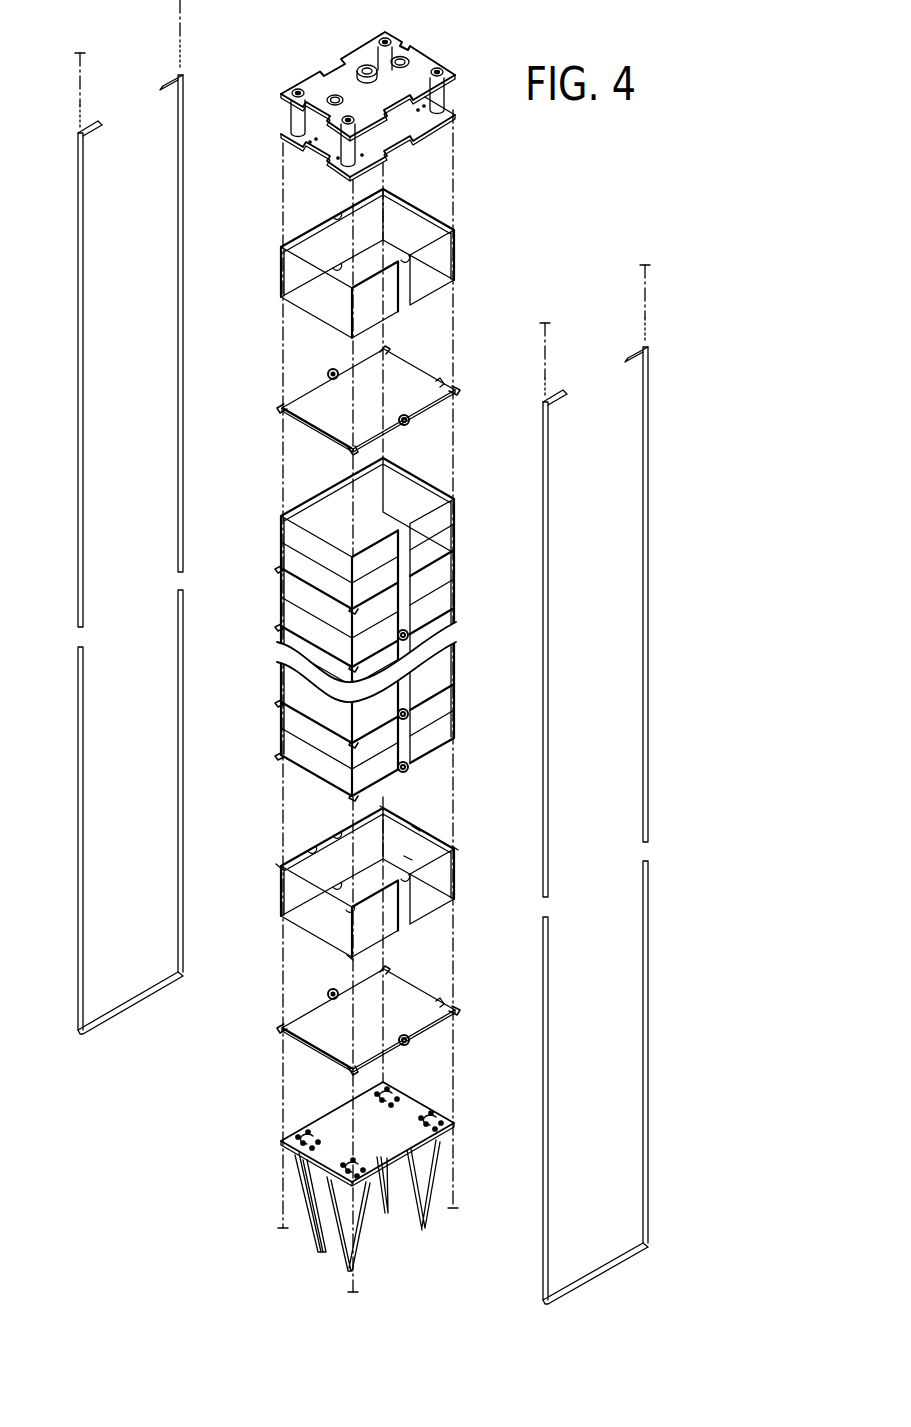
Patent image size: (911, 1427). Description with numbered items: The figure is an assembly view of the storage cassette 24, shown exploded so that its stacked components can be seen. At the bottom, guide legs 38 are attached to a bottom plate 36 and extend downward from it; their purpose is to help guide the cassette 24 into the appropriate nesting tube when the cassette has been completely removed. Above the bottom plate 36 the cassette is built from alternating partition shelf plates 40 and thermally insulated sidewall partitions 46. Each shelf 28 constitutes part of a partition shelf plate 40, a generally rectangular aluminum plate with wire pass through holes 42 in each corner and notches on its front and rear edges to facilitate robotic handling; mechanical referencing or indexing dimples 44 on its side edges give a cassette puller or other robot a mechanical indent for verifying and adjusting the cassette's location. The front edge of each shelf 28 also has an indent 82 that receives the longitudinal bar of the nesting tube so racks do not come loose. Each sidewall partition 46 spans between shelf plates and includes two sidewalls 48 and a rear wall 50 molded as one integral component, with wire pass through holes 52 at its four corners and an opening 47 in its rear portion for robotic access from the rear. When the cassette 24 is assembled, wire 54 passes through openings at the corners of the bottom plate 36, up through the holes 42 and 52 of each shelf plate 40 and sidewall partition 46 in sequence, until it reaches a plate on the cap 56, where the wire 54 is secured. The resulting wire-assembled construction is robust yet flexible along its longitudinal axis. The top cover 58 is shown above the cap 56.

The storage cassette 24 is at (531, 203).
The shelf 28 is at (389, 404).
The bottom plate 36 is at (310, 1125).
The guide legs 38 is at (313, 1236).
The partition shelf plate 40 is at (422, 378).
The wire pass through holes 42 is at (392, 352).
The indexing dimples 44 is at (333, 373).
The thermally insulated sidewall partition 46 is at (443, 247).
The opening 47 is at (410, 858).
The sidewalls 48 is at (312, 855).
The rear wall 50 is at (417, 830).
The wire pass through holes 52 is at (386, 806).
The wire 54 is at (78, 387).
The cap 56 is at (400, 125).
The top cover 58 is at (313, 78).
The indent 82 is at (316, 426).